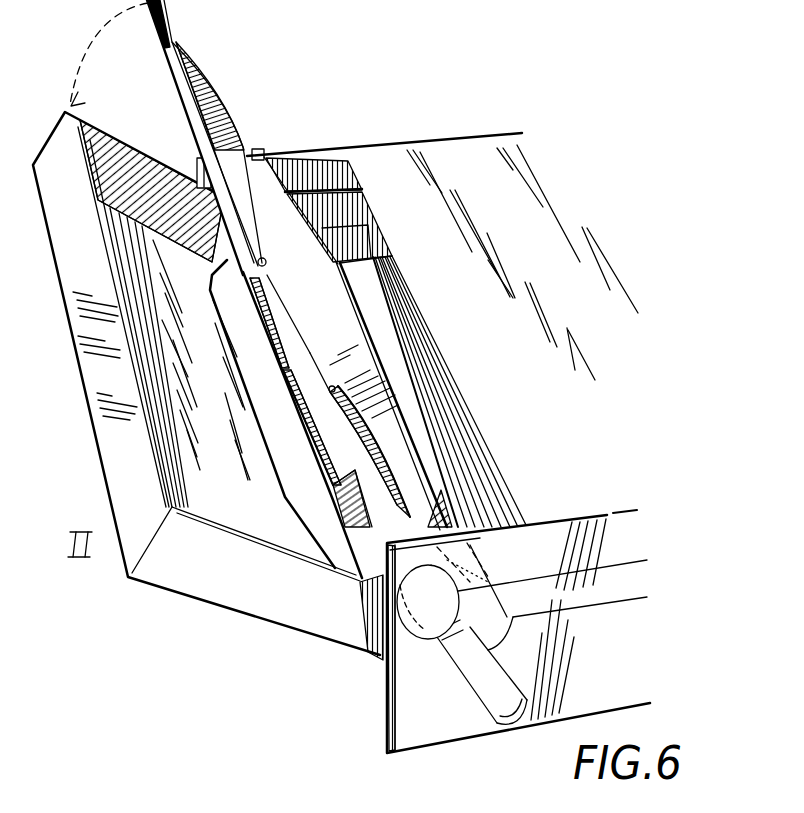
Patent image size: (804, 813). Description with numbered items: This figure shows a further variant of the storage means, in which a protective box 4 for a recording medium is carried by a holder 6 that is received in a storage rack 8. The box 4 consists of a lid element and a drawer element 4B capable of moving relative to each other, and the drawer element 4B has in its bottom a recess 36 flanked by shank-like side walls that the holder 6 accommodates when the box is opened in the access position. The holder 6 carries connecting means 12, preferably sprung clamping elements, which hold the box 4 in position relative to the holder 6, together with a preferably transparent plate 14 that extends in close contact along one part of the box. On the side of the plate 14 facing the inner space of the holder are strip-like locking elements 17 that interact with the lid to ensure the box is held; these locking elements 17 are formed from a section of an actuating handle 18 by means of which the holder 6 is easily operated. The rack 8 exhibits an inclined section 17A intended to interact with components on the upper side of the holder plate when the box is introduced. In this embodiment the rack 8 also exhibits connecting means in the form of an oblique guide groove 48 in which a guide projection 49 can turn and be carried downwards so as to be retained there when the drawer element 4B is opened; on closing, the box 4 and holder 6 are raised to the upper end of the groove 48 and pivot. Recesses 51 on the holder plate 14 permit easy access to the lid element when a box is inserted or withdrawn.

The protective box 4 is at (146, 592).
The drawer element 4B is at (262, 612).
The holder 6 is at (355, 584).
The storage rack 8 is at (636, 618).
The connecting means 12 is at (301, 437).
The transparent plate 14 is at (267, 187).
The locking elements 17 is at (263, 263).
The inclined section 17A is at (447, 344).
The actuating handle 18 is at (191, 107).
The recess 36 is at (303, 508).
The guide groove 48 is at (476, 700).
The guide projection 49 is at (498, 700).
The recesses 51 is at (381, 463).